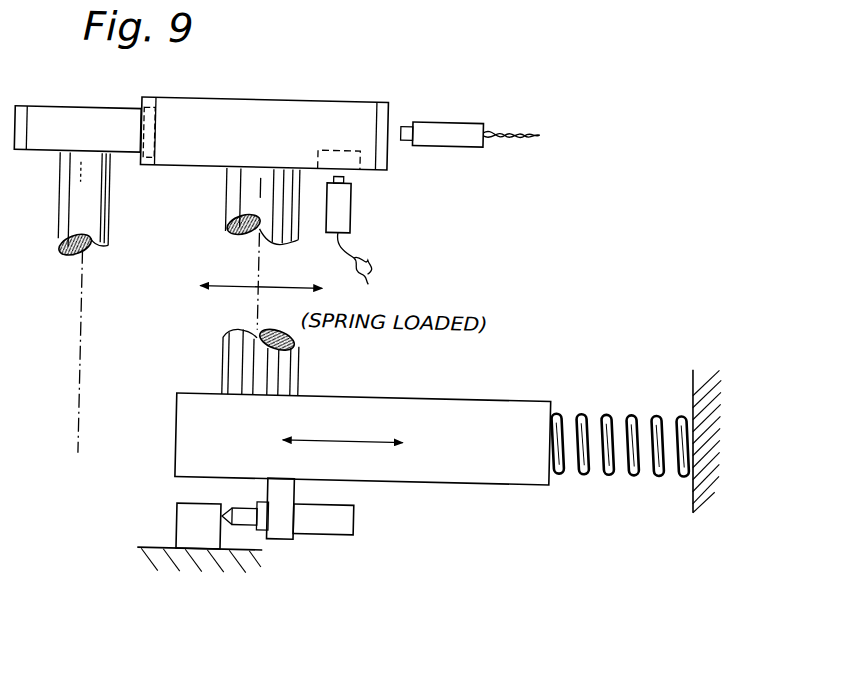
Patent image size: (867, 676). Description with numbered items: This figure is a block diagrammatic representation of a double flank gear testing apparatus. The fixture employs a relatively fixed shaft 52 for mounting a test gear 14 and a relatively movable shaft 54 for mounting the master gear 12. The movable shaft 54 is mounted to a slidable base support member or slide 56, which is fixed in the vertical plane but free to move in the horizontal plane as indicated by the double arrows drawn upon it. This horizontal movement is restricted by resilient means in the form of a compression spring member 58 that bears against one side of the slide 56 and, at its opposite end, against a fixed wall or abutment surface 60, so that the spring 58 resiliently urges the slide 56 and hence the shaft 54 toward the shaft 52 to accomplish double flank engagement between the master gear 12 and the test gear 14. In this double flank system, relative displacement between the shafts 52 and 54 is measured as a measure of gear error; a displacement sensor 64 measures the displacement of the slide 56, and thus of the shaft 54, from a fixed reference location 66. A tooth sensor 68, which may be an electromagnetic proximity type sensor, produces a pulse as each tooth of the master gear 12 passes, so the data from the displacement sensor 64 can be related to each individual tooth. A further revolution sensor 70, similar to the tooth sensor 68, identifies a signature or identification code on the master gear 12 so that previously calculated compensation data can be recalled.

The master gear 12 is at (272, 136).
The test gear 14 is at (88, 142).
The fixed shaft 52 is at (105, 206).
The movable shaft 54 is at (225, 211).
The slide 56 is at (235, 441).
The compression spring member 58 is at (634, 398).
The fixed wall 60 is at (696, 474).
The displacement sensor 64 is at (358, 506).
The fixed reference location 66 is at (182, 516).
The tooth sensor 68 is at (460, 136).
The revolution sensor 70 is at (348, 188).